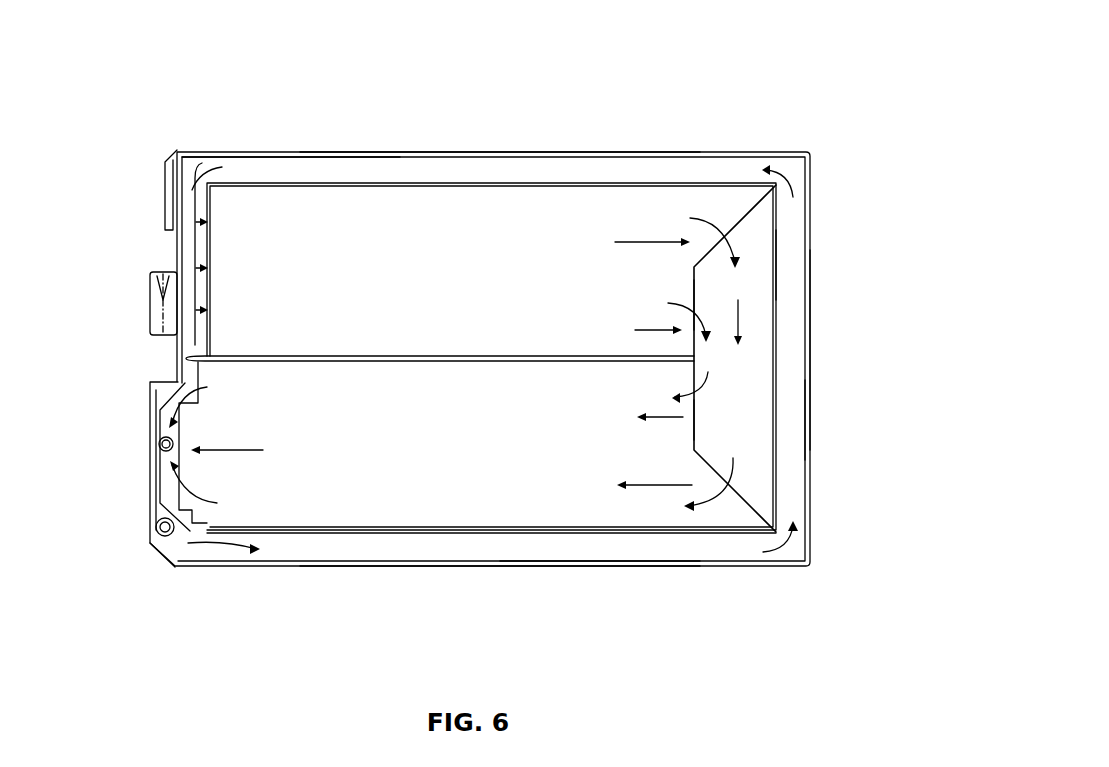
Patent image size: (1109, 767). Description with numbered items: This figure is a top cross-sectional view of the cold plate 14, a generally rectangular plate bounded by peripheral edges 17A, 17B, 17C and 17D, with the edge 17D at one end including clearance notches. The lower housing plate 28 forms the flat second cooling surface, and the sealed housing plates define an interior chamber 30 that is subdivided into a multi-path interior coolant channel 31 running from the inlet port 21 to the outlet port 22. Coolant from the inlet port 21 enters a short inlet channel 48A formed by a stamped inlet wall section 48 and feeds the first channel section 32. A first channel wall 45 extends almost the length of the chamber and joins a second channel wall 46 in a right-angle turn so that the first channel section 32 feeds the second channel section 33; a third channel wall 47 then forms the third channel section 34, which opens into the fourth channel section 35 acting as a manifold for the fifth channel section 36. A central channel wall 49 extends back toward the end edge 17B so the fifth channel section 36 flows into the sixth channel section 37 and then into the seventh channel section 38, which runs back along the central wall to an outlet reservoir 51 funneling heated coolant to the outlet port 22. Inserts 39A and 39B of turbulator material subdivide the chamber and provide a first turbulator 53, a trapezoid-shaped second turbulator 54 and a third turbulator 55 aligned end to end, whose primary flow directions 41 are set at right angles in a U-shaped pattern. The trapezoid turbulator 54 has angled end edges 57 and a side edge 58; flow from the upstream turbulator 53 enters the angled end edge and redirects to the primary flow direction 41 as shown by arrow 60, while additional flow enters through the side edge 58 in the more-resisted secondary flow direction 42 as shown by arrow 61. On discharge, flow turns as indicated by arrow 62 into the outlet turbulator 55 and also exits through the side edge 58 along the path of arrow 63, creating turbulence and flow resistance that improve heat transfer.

The cold plate 14 is at (211, 133).
The peripheral edge 17A is at (448, 568).
The peripheral edge 17B is at (812, 307).
The peripheral edge 17C is at (510, 150).
The peripheral edge 17D is at (150, 293).
The inlet port 21 is at (157, 543).
The outlet port 22 is at (157, 447).
The lower housing plate 28 is at (342, 203).
The interior chamber 30 is at (696, 205).
The interior coolant channel 31 is at (211, 555).
The first channel section 32 is at (607, 553).
The second channel section 33 is at (808, 415).
The third channel section 34 is at (427, 160).
The fourth channel section 35 is at (192, 247).
The fifth channel section 36 is at (388, 208).
The sixth channel section 37 is at (763, 267).
The seventh channel section 38 is at (530, 517).
The trapezoidal portion of insert 39A is at (760, 250).
The rectangular portion of insert 39B is at (682, 278).
The primary flow direction 41 is at (627, 240).
The secondary flow direction 42 is at (648, 330).
The first channel wall 45 is at (692, 533).
The second channel wall 46 is at (780, 507).
The third channel wall 47 is at (668, 187).
The inlet wall section 48 is at (153, 505).
The inlet channel 48A is at (178, 542).
The central channel wall 49 is at (312, 353).
The outlet reservoir 51 is at (167, 413).
The first turbulator 53 is at (267, 208).
The second turbulator 54 is at (755, 225).
The third turbulator 55 is at (488, 398).
The angled end edges 57 is at (745, 215).
The side edge 58 is at (690, 417).
The reference arrow 60 is at (760, 223).
The reference arrow 61 is at (705, 305).
The arrow 62 is at (733, 505).
The arrow 63 is at (690, 392).